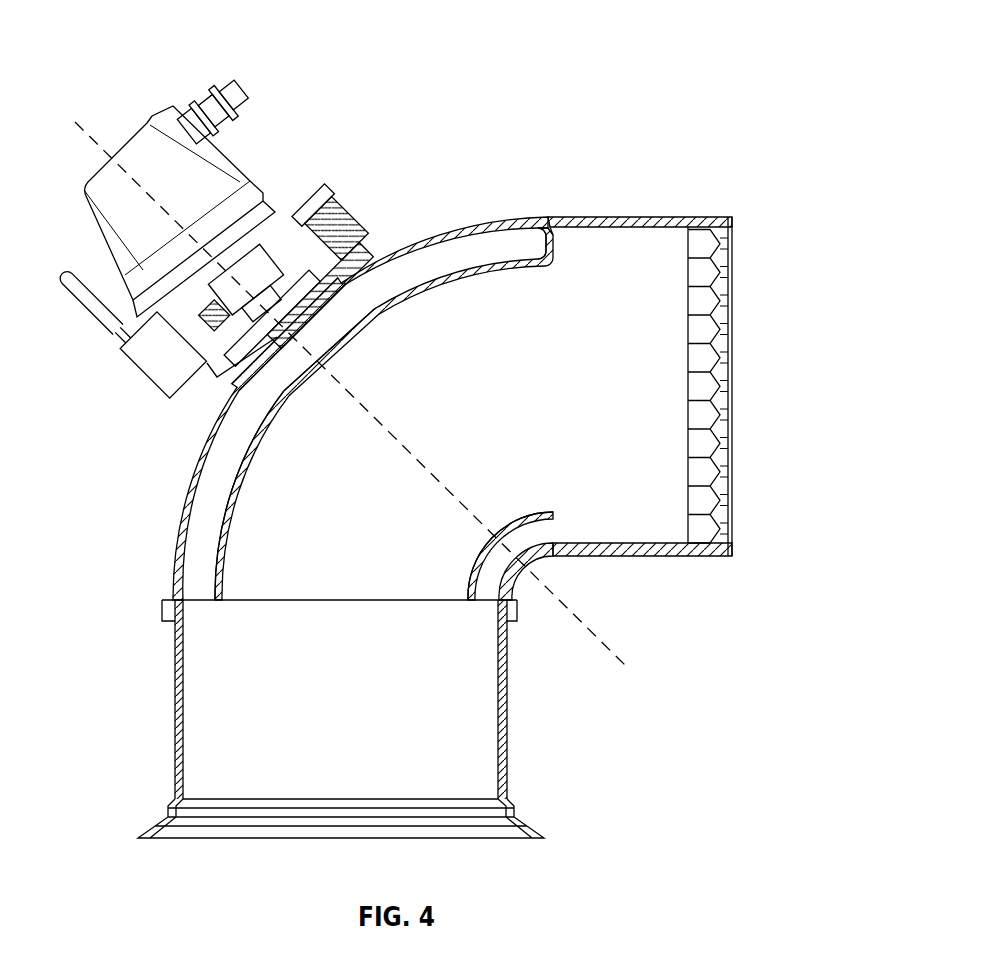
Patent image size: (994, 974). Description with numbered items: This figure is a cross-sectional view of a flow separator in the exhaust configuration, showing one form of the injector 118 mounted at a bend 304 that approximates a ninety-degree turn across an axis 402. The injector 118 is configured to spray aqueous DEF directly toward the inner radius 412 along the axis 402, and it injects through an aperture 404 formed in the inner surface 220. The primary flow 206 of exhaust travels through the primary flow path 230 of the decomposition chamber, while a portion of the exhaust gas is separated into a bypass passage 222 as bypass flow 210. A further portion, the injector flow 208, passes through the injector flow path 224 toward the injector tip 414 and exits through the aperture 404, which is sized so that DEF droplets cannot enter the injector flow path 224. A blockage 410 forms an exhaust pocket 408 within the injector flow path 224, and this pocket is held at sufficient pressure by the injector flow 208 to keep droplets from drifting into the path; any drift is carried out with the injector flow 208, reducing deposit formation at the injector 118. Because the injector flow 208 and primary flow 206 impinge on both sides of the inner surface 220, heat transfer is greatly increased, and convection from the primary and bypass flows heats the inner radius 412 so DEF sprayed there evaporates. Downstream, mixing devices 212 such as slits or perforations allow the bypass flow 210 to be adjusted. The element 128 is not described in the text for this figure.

The injector 118 is at (223, 244).
The flange 128 is at (147, 613).
The primary flow 206 is at (303, 719).
The injector flow 208 is at (200, 603).
The bypass flow 210 is at (490, 603).
The mixing devices 212 is at (716, 386).
The inner surface 220 is at (450, 279).
The bypass passage 222 is at (544, 527).
The injector flow path 224 is at (207, 499).
The primary flow path 230 is at (598, 397).
The bend 304 is at (182, 433).
The axis 402 is at (584, 627).
The aperture 404 is at (312, 373).
The exhaust pocket 408 is at (513, 245).
The blockage 410 is at (621, 250).
The inner radius 412 is at (467, 538).
The injector tip 414 is at (289, 323).